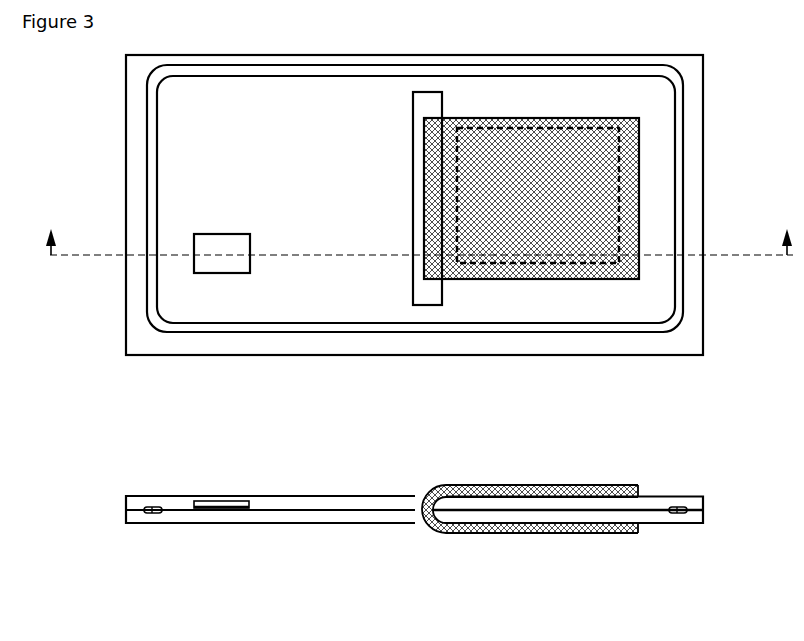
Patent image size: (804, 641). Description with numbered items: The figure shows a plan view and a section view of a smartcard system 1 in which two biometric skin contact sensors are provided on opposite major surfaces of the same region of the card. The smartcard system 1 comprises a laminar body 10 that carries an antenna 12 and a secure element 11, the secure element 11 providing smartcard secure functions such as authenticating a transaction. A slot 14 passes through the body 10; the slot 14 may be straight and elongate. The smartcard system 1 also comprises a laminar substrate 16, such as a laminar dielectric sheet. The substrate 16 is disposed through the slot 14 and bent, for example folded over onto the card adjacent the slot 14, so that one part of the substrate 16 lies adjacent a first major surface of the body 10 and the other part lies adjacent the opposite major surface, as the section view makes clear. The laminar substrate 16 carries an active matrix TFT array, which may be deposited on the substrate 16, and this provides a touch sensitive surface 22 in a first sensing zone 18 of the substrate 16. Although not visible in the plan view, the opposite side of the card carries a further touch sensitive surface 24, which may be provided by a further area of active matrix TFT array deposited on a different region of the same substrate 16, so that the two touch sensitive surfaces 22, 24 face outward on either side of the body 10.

The smartcard system 1 is at (84, 182).
The laminar body 10 is at (703, 293).
The secure element 11 is at (206, 278).
The antenna 12 is at (150, 515).
The slot 14 is at (437, 300).
The laminar substrate 16 is at (553, 279).
The first sensing zone 18 is at (617, 185).
The touch sensitive surface 22 is at (491, 485).
The further touch sensitive surface 24 is at (508, 534).